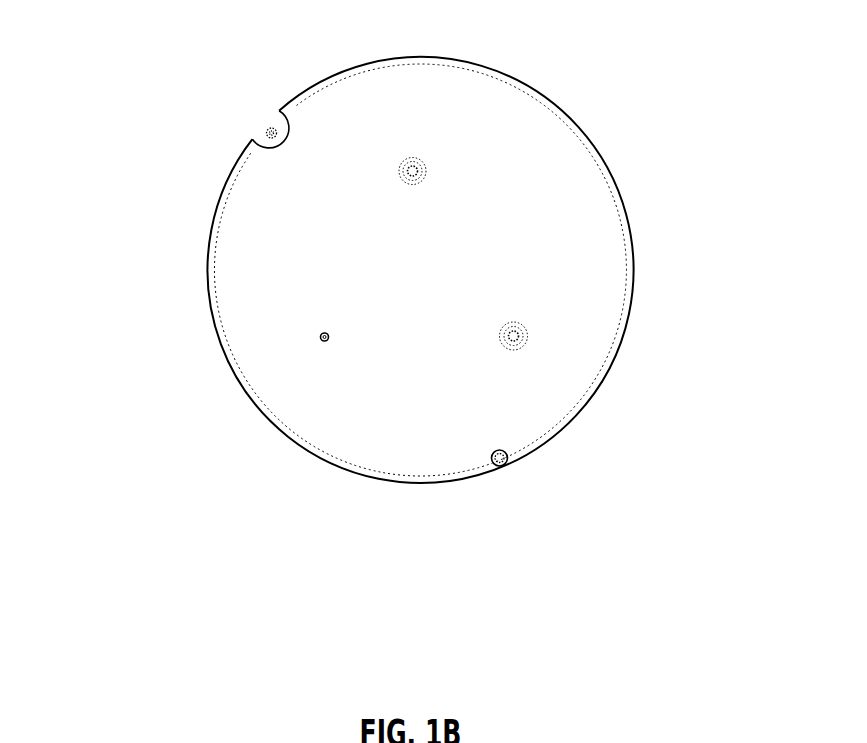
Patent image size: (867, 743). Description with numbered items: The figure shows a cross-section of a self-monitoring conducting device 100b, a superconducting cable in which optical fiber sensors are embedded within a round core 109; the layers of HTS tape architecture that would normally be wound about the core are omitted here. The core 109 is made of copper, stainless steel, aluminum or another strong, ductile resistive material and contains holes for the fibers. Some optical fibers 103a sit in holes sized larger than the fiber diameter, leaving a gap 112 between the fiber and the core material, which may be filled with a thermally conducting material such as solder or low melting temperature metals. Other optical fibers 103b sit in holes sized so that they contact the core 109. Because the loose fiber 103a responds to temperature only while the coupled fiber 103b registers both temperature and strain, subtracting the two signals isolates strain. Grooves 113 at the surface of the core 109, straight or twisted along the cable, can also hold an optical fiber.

The self-monitoring conducting device 100b is at (195, 80).
The core 109 is at (570, 253).
The groove 113 is at (262, 128).
The optical fiber 103a is at (517, 330).
The gap 112 is at (521, 341).
The optical fiber 103b is at (318, 337).